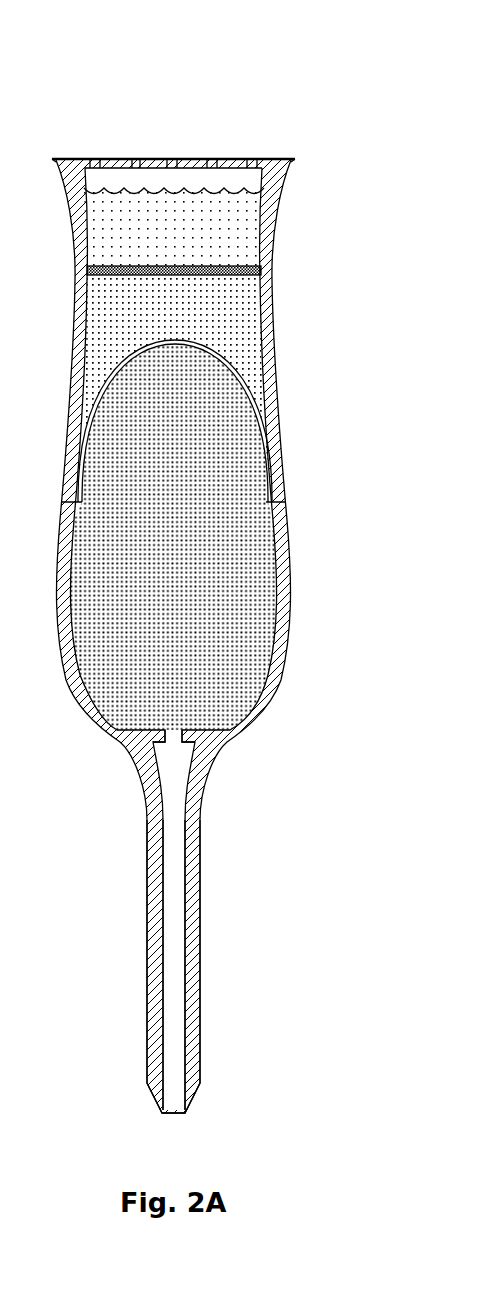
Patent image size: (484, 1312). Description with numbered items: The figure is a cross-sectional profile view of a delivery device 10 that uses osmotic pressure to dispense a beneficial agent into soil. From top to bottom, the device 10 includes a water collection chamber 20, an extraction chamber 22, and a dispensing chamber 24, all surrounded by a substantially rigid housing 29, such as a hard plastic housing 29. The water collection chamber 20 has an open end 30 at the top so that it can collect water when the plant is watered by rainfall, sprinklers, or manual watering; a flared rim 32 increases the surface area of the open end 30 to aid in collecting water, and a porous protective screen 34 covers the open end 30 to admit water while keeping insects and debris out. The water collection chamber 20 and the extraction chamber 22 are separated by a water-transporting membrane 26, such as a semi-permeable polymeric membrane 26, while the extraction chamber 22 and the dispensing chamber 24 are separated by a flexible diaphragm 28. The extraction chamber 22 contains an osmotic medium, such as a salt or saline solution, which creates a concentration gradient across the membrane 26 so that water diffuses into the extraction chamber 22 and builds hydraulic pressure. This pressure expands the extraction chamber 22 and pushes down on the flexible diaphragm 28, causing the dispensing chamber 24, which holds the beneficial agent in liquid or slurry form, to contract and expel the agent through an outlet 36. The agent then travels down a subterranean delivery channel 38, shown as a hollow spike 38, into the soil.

The delivery device 10 is at (90, 81).
The water collection chamber 20 is at (233, 228).
The extraction chamber 22 is at (240, 328).
The dispensing chamber 24 is at (248, 542).
The water-transporting membrane 26 is at (114, 277).
The flexible diaphragm 28 is at (176, 339).
The rigid housing 29 is at (76, 370).
The open end 30 is at (173, 122).
The flared rim 32 is at (287, 162).
The porous protective screen 34 is at (156, 162).
The outlet 36 is at (172, 738).
The subterranean delivery channel 38 is at (190, 955).